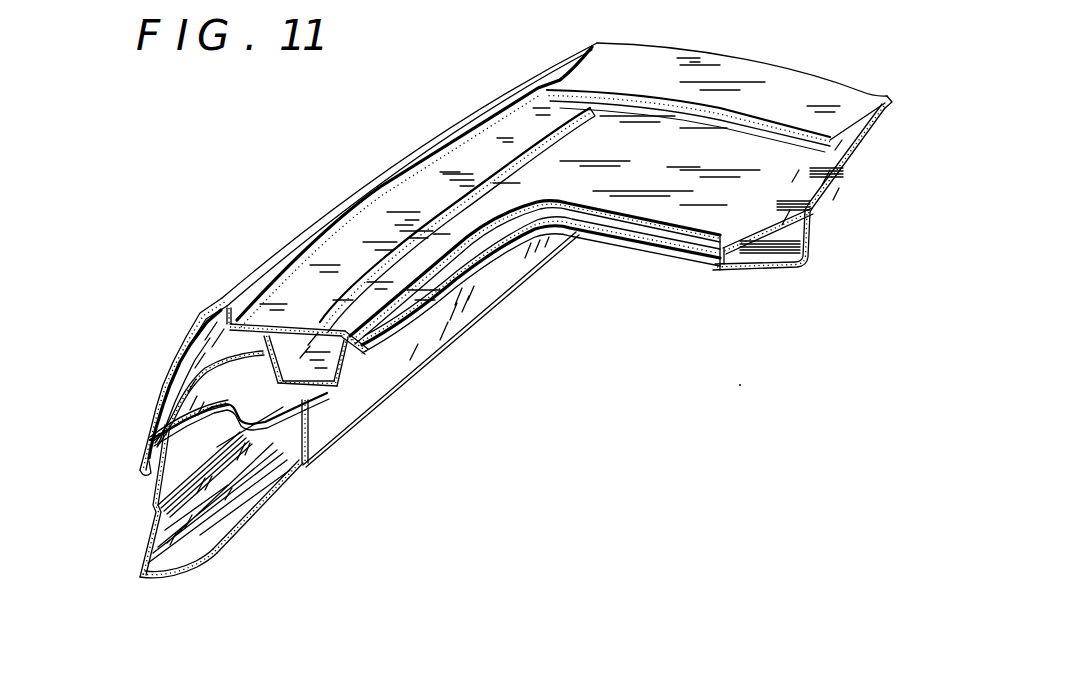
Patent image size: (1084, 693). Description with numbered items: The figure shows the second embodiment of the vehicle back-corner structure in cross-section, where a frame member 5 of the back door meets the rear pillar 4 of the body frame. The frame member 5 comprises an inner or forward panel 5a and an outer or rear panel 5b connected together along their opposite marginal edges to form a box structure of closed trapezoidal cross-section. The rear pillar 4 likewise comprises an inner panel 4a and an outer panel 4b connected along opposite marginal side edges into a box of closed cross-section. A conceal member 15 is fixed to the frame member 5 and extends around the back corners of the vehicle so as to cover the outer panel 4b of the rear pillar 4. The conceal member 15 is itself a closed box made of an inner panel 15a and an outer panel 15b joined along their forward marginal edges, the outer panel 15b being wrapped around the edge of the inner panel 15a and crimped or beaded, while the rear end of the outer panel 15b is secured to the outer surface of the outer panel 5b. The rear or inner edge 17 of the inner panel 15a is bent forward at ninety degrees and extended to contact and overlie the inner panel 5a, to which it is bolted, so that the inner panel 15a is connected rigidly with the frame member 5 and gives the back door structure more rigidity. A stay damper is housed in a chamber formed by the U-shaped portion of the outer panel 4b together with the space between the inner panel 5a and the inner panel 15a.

The conceal member 15 is at (185, 325).
The inner panel 15a is at (187, 433).
The outer panel 15b is at (183, 375).
The rear or inner edge of inner panel 17 is at (205, 375).
The frame member 5 is at (337, 392).
The inner panel 5a is at (350, 365).
The outer panel 5b is at (320, 322).
The rear pillar 4 is at (264, 514).
The inner panel 4a is at (200, 567).
The outer panel 4b is at (140, 557).